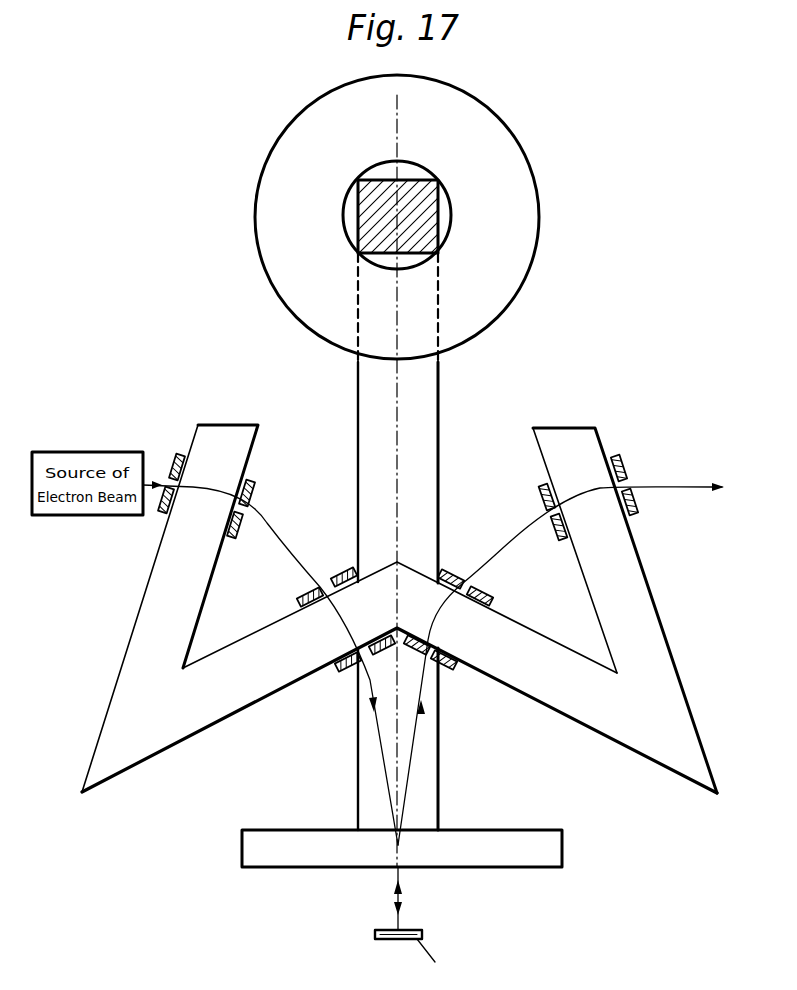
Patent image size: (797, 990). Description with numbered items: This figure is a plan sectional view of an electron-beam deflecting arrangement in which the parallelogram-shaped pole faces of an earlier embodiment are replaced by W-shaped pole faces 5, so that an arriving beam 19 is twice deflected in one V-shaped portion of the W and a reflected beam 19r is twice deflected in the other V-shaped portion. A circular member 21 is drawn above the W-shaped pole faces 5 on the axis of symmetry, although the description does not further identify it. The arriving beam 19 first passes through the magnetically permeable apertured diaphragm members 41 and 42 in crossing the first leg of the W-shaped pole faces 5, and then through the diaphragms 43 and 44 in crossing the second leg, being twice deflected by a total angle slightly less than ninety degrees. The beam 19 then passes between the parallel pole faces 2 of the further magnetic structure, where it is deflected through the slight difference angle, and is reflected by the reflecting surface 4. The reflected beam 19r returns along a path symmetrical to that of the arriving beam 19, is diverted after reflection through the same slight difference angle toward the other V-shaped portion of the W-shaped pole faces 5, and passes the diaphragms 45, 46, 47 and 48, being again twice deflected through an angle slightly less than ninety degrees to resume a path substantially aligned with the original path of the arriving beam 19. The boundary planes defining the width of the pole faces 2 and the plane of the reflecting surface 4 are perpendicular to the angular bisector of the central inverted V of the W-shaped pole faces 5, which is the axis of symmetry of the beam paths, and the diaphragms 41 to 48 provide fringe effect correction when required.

The pole face 2 is at (468, 855).
The reflecting surface 4 is at (388, 940).
The W-shaped pole face 5 is at (572, 692).
The arriving beam 19 is at (148, 490).
The reflected beam 19r is at (670, 487).
The disc 21 is at (517, 213).
The apertured diaphragm member 41 is at (173, 455).
The apertured diaphragm member 42 is at (253, 492).
The apertured diaphragm member 43 is at (345, 572).
The apertured diaphragm member 44 is at (348, 670).
The apertured diaphragm member 45 is at (447, 667).
The apertured diaphragm member 46 is at (487, 592).
The apertured diaphragm member 47 is at (545, 500).
The apertured diaphragm member 48 is at (637, 502).